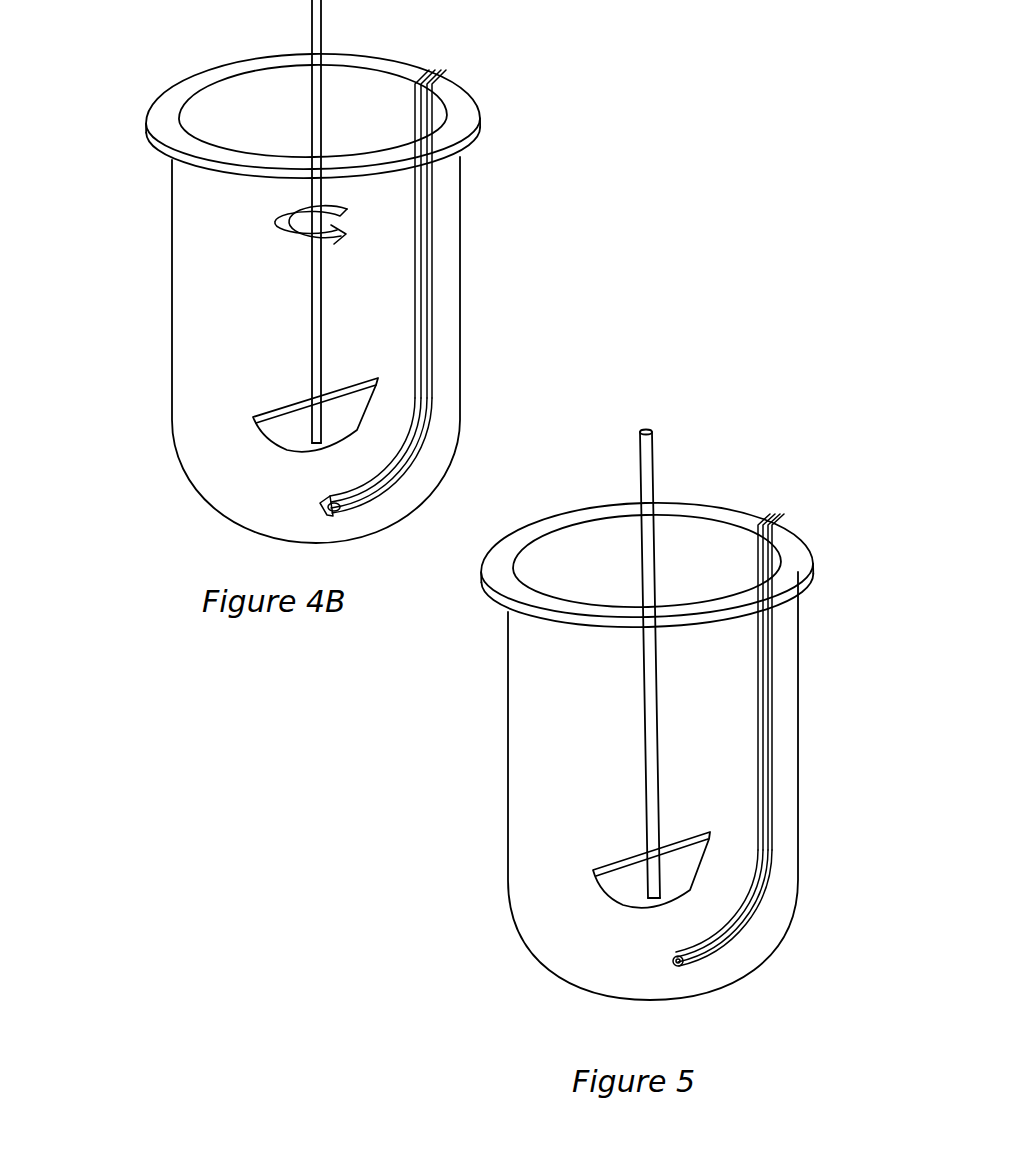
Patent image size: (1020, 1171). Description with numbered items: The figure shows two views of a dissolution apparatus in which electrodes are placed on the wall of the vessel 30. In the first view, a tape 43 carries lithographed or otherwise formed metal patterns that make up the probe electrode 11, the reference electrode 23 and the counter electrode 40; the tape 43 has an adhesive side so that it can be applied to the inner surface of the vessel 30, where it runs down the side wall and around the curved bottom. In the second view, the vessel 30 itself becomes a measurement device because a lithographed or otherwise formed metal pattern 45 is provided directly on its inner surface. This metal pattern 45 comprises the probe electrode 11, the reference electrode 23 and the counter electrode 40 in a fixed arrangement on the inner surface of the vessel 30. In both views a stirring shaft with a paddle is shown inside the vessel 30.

In FIG. 4B, the vessel 30 is at (113, 334).
In FIG. 5, the vessel 30 is at (468, 835).
In FIG. 4B, the counter electrode 40 is at (418, 463).
In FIG. 5, the counter electrode 40 is at (745, 927).
In FIG. 4B, the tape 43 is at (452, 247).
In FIG. 5, the metal pattern 45 is at (793, 669).
In FIG. 4B, the reference electrode 23 is at (348, 510).
In FIG. 5, the reference electrode 23 is at (683, 962).
In FIG. 4B, the probe electrode 11 is at (337, 513).
In FIG. 5, the probe electrode 11 is at (679, 967).